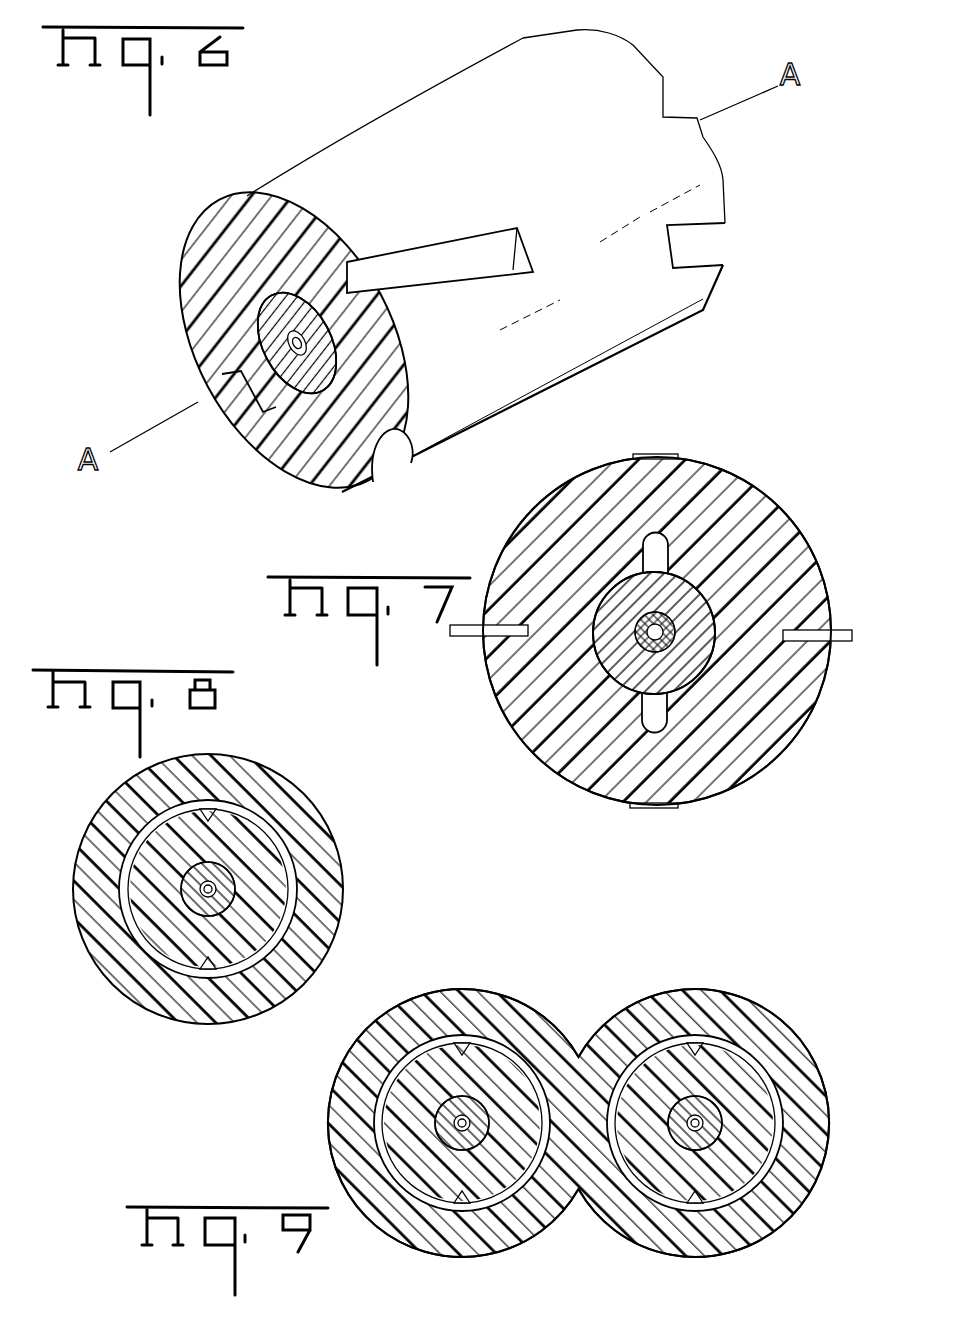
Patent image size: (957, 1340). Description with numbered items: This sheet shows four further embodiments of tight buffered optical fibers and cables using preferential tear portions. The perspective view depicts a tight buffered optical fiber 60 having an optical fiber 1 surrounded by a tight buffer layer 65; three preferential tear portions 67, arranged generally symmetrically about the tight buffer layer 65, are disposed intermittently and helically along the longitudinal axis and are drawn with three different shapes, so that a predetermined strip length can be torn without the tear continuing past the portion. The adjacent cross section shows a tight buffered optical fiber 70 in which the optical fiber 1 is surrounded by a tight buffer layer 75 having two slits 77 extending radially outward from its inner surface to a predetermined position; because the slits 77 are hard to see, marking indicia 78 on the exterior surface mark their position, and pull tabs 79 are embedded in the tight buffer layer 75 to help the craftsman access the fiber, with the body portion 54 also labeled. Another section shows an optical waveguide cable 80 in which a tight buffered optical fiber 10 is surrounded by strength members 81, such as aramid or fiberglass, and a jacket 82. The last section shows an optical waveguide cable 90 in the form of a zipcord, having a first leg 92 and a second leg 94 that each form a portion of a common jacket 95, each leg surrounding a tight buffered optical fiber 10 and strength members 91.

In FIG. 6, the optical fiber 1 is at (345, 380).
In FIG. 7, the optical fiber 1 is at (718, 617).
In FIG. 8, the tight buffered optical fiber 10 is at (268, 857).
In FIG. 9, the tight buffered optical fiber 10 is at (733, 1053).
In FIG. 7, the ferrule body 54 is at (530, 740).
In FIG. 6, the tight buffered optical fiber 60 is at (437, 278).
In FIG. 6, the tight buffer layer 65 is at (205, 245).
In FIG. 6, the preferential tear portions 67 is at (722, 240).
In FIG. 7, the tight buffered optical fiber 70 is at (610, 633).
In FIG. 7, the tight buffer layer 75 is at (597, 482).
In FIG. 7, the slits 77 is at (660, 546).
In FIG. 7, the marking indicia 78 is at (667, 455).
In FIG. 7, the pull tab 79 is at (463, 638).
In FIG. 8, the optical waveguide cable 80 is at (202, 890).
In FIG. 8, the strength members 81 is at (150, 950).
In FIG. 8, the jacket 82 is at (300, 957).
In FIG. 9, the optical waveguide cable 90 is at (545, 1099).
In FIG. 9, the strength members 91 is at (773, 1087).
In FIG. 9, the first leg 92 is at (410, 1237).
In FIG. 9, the second leg 94 is at (760, 1233).
In FIG. 9, the common jacket 95 is at (605, 1027).